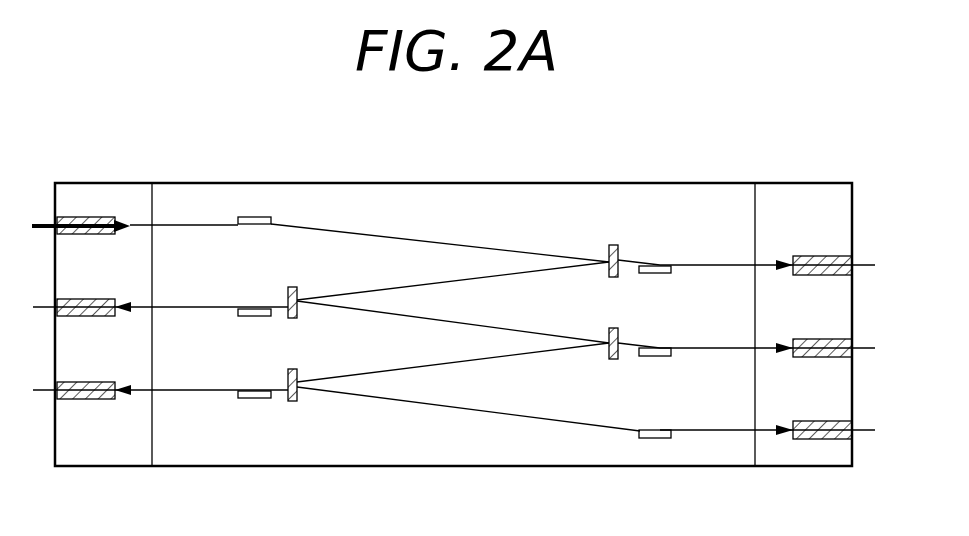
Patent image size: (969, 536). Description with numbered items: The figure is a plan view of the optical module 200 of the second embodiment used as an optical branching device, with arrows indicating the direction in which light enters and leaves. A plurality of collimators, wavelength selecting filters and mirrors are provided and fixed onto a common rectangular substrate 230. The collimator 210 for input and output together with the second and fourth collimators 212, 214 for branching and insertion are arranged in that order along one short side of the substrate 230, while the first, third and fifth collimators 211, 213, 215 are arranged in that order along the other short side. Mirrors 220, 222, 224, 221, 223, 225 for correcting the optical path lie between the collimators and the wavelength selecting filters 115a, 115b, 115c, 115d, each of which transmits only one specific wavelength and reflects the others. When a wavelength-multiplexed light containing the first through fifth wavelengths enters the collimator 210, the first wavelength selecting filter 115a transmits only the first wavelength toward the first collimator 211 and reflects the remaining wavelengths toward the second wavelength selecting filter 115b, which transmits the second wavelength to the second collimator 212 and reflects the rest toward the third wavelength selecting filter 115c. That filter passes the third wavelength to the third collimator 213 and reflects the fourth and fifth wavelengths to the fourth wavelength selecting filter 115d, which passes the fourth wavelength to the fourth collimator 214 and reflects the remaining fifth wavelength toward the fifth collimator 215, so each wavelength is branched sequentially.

The optical module 200 is at (656, 157).
The substrate 230 is at (272, 466).
The collimator for input and output 210 is at (80, 235).
The second collimator for branching and insertion 212 is at (80, 317).
The fourth collimator for branching and insertion 214 is at (80, 400).
The first collimator for branching and insertion 211 is at (805, 256).
The third collimator for branching and insertion 213 is at (805, 339).
The fifth collimator for branching and insertion 215 is at (805, 421).
The mirror 220 is at (247, 225).
The mirror 222 is at (247, 317).
The mirror 224 is at (247, 399).
The mirror 221 is at (650, 274).
The mirror 223 is at (650, 357).
The mirror 225 is at (632, 435).
The first wavelength selecting filter 115a is at (611, 245).
The second wavelength selecting filter 115b is at (292, 287).
The third wavelength selecting filter 115c is at (611, 328).
The fourth wavelength selecting filter 115d is at (292, 369).